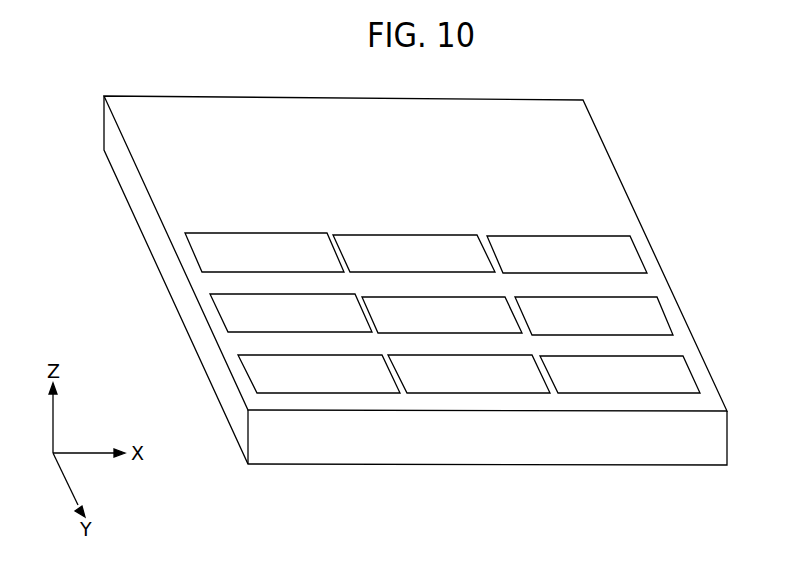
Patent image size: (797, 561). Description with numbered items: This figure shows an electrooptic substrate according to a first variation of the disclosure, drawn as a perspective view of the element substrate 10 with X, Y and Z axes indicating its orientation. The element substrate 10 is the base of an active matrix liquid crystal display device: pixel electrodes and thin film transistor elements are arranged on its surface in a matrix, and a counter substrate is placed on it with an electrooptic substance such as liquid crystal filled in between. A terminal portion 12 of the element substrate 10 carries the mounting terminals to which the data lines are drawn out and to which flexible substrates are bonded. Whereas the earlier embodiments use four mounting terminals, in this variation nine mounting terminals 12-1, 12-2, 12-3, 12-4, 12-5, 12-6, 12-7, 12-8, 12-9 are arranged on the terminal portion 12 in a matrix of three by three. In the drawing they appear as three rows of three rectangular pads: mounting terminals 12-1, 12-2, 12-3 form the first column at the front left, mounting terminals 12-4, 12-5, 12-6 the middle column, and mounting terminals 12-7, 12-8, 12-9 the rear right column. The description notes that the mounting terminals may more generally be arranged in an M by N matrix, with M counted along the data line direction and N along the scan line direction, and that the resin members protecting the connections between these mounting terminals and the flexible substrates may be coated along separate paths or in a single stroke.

The element substrate 10 is at (598, 152).
The terminal portion 12 is at (420, 298).
The mounting terminal 12-1 is at (243, 368).
The mounting terminal 12-2 is at (215, 306).
The mounting terminal 12-3 is at (188, 240).
The mounting terminal 12-4 is at (458, 345).
The mounting terminal 12-5 is at (433, 294).
The mounting terminal 12-6 is at (414, 223).
The mounting terminal 12-7 is at (610, 355).
The mounting terminal 12-8 is at (596, 296).
The mounting terminal 12-9 is at (578, 223).